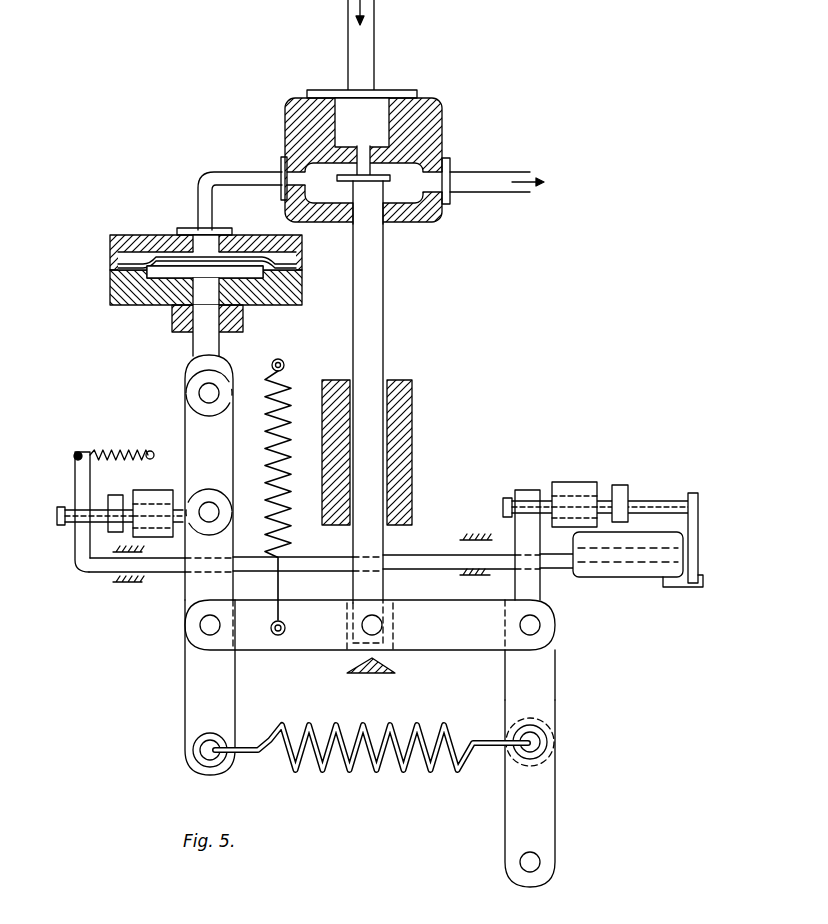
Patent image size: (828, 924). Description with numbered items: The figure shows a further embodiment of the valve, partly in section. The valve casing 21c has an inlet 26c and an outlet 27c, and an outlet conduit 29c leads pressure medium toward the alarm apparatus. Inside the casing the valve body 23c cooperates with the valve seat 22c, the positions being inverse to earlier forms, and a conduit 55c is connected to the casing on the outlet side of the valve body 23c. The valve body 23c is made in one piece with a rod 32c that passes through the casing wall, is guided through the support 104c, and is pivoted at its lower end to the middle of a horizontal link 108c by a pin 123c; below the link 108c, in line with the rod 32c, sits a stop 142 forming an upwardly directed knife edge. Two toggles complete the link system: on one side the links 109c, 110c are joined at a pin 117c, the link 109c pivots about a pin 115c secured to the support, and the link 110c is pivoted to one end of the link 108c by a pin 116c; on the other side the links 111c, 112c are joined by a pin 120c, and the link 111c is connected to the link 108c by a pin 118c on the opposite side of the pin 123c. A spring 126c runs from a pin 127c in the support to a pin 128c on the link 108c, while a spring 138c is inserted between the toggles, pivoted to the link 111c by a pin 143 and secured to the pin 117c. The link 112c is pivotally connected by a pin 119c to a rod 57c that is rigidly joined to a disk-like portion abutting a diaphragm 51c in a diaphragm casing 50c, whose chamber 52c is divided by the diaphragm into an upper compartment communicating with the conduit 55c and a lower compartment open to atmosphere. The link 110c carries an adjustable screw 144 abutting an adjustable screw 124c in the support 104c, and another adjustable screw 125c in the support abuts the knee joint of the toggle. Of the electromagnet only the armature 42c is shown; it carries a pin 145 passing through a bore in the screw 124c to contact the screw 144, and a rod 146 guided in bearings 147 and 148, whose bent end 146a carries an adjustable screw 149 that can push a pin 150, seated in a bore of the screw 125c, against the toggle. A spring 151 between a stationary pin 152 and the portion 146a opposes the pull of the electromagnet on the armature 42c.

The inlet 26c is at (400, 98).
The casing of the valve 21c is at (432, 116).
The valve seat 22c is at (355, 163).
The valve body 23c is at (372, 179).
The rod 32c is at (384, 291).
The conduit 55c is at (212, 180).
The outlet 27c is at (450, 166).
The outlet conduit 29c is at (498, 189).
The diaphragm casing 50c is at (125, 242).
The diaphragm 51c is at (135, 267).
The chamber 52c is at (150, 286).
The rod 57c is at (184, 318).
The link 112c is at (186, 418).
The pin 119c is at (205, 390).
The pin 120c is at (211, 510).
The link 111c is at (195, 678).
The pin 118c is at (203, 630).
The pin 143 is at (200, 750).
The horizontal link 108c is at (418, 638).
The pin 123c is at (376, 622).
The pin 116c is at (535, 624).
The stop 142 is at (363, 672).
The link 110c is at (539, 677).
The link 109c is at (539, 795).
The pin 117c is at (541, 744).
The pin 115c is at (541, 864).
The spring 138c is at (354, 771).
The spring 126c is at (290, 410).
The pin 127c is at (284, 362).
The pin 128c is at (278, 640).
The support 104c is at (402, 425).
The rod 146 is at (420, 560).
The bent end portion 146a is at (74, 470).
The spring 151 is at (112, 451).
The stationary pin 152 is at (150, 451).
The pin 150 is at (109, 506).
The adjustable screw 125c is at (121, 496).
The adjustable screw 149 is at (64, 560).
The bearing 148 is at (129, 585).
The bearing 147 is at (481, 538).
The adjustable screw 144 is at (504, 499).
The adjustable screw 124c is at (614, 485).
The pin 145 is at (645, 497).
The armature 42c is at (692, 492).